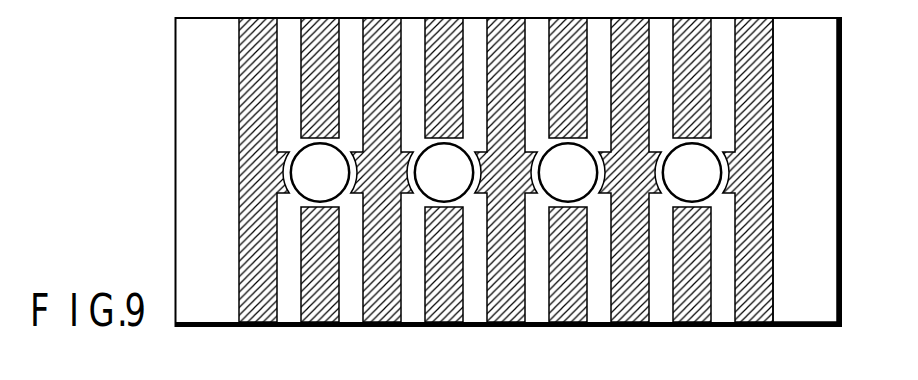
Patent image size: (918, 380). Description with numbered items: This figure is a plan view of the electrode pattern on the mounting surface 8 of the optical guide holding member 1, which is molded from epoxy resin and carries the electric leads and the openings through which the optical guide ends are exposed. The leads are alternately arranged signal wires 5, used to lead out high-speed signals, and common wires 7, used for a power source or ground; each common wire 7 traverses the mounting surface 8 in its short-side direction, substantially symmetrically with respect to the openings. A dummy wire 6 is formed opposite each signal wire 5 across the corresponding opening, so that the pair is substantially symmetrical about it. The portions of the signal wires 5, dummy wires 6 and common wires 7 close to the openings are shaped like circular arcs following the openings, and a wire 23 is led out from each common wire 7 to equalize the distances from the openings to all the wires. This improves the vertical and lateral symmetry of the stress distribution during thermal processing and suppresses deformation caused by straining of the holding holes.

The optical guide holding member 1 is at (803, 327).
The signal wire 5 is at (318, 88).
The dummy wire 6 is at (323, 310).
The common wire 7 is at (252, 54).
The mounting surface 8 is at (817, 49).
The wire led out from common wire 23 is at (282, 172).